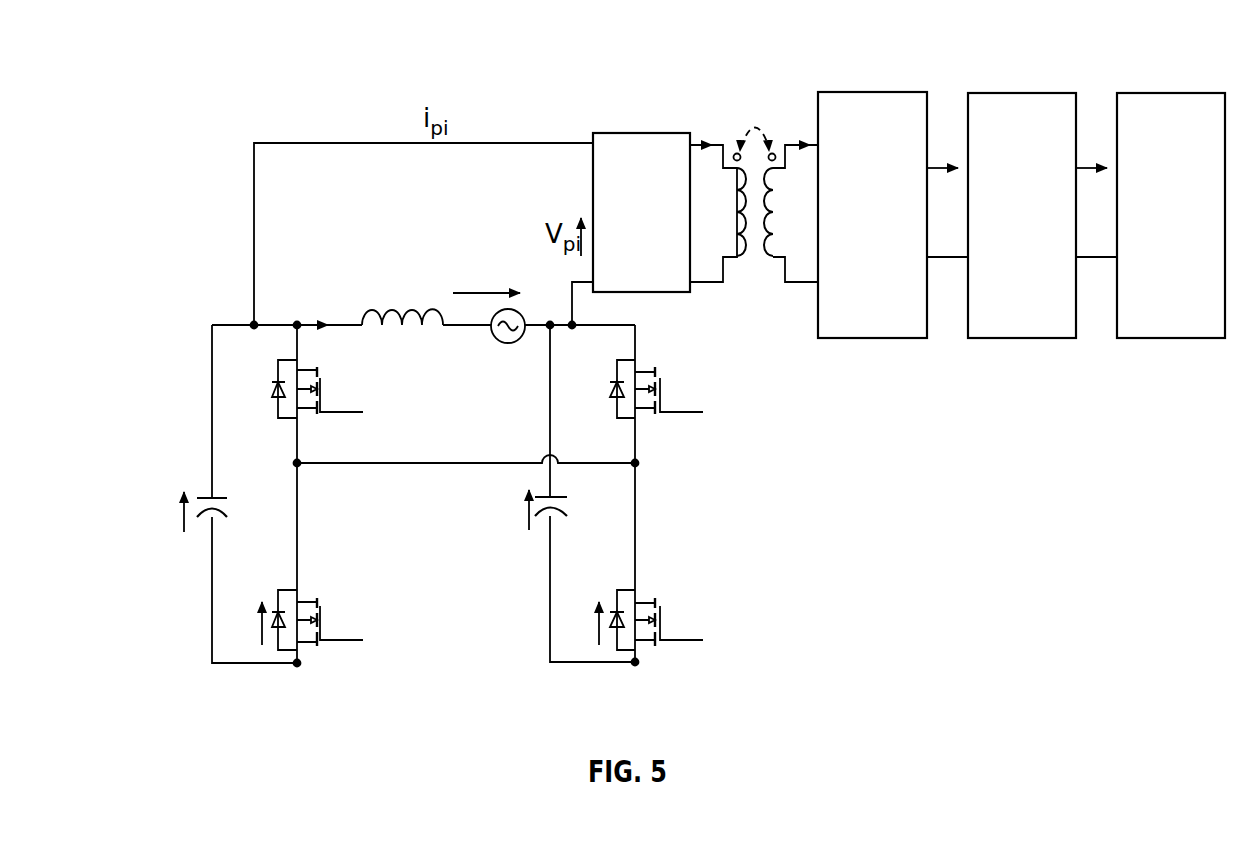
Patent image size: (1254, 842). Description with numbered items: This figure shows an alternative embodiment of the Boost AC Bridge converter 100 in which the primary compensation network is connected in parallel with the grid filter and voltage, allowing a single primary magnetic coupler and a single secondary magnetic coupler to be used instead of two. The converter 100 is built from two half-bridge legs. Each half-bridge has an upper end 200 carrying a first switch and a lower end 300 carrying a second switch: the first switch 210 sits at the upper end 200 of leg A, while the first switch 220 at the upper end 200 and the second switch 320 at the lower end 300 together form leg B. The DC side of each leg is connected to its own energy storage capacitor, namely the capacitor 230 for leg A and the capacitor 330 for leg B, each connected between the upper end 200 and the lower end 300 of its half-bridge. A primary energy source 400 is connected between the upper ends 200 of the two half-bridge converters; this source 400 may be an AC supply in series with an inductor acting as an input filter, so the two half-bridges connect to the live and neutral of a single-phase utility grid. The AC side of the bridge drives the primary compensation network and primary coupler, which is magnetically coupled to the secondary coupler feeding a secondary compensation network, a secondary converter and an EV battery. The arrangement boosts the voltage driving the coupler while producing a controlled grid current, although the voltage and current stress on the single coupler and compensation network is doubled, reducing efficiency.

The Boost AC Bridge converter 100 is at (970, 40).
The upper end 200 is at (134, 325).
The first switch 210 is at (284, 350).
The first switch 220 is at (644, 341).
The capacitor 230 is at (240, 483).
The lower end 300 is at (134, 507).
The second switch 320 is at (624, 665).
The capacitor 330 is at (572, 460).
The primary energy source 400 is at (537, 237).